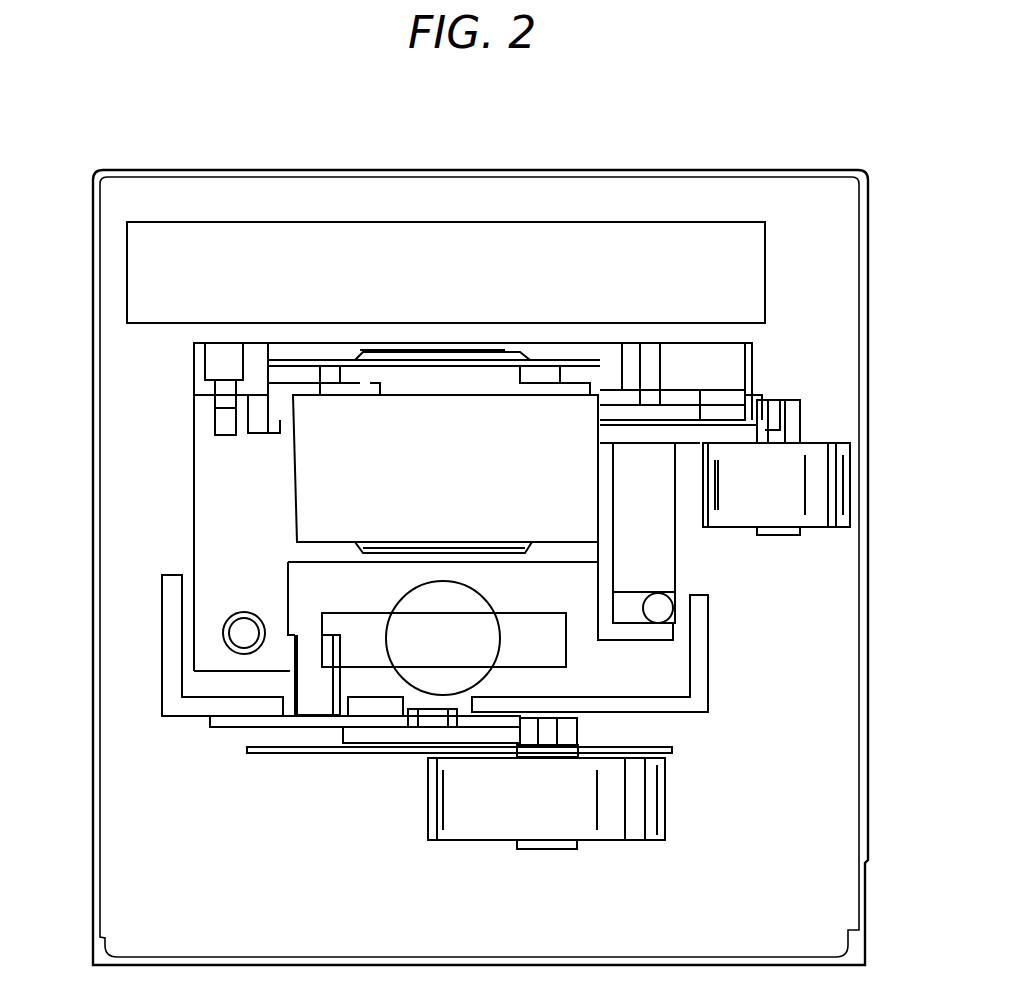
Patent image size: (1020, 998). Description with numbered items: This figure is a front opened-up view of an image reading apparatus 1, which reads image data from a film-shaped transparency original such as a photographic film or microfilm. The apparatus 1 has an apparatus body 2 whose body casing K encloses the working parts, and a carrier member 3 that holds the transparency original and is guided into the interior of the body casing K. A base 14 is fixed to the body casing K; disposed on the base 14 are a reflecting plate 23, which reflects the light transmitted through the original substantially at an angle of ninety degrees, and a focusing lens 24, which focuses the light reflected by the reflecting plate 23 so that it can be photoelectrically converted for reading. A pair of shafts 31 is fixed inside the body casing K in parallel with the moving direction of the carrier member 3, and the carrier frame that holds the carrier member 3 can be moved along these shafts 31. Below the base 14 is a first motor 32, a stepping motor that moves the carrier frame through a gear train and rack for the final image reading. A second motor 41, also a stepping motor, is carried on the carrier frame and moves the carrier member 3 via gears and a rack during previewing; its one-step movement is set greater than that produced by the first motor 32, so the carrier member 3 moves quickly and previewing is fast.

The image reading apparatus 1 is at (733, 103).
The apparatus body 2 is at (115, 362).
The body casing K is at (868, 333).
The carrier member 3 is at (318, 388).
The second motor 41 is at (816, 452).
The shafts 31 is at (244, 626).
The reflecting plate 23 is at (565, 653).
The focusing lens 24 is at (468, 590).
The base 14 is at (700, 632).
The first motor 32 is at (655, 825).